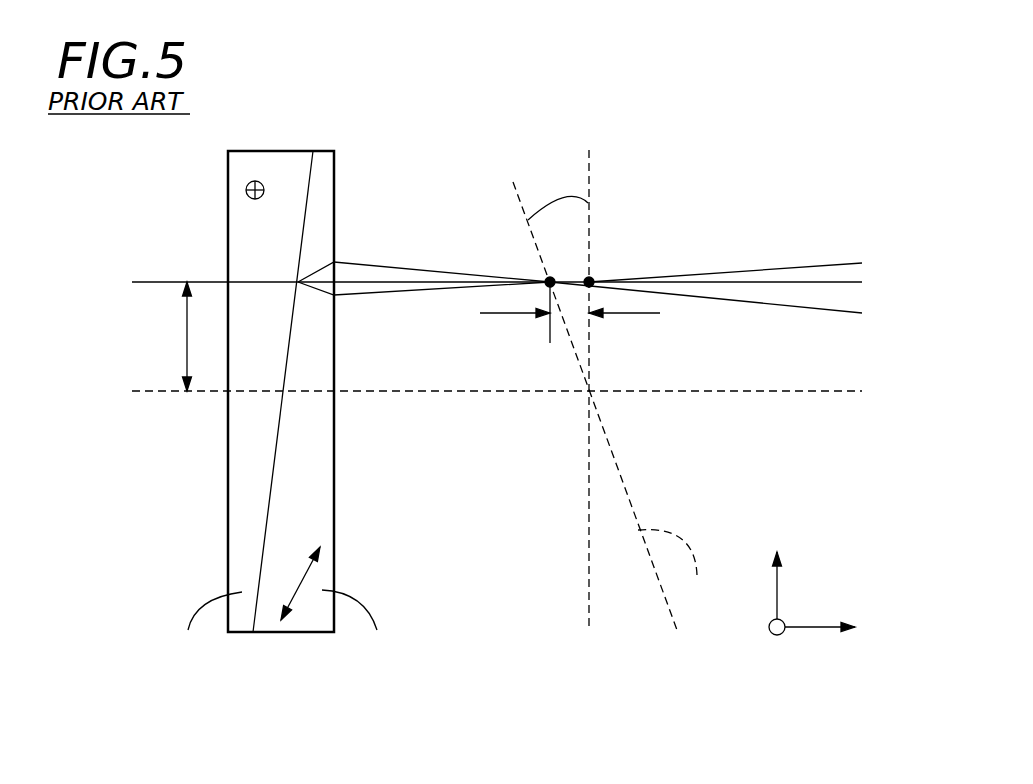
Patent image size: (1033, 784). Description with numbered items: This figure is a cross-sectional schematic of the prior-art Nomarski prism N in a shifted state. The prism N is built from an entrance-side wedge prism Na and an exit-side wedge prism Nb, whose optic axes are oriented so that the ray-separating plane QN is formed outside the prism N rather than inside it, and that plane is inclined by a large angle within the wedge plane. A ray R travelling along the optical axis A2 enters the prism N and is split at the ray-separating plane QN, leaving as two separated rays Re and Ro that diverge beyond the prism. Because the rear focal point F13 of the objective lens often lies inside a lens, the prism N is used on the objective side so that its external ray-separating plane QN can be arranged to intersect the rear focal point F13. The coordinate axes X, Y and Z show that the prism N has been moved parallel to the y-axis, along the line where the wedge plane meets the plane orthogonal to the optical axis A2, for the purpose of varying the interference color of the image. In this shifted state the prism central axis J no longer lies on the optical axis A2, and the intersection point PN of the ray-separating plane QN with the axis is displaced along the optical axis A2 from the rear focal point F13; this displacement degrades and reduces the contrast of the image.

The Nomarski prism N is at (278, 158).
The entrance-side wedge prism Na is at (206, 636).
The exit-side wedge prism Nb is at (355, 635).
The optical axis / incident ray R is at (150, 282).
The prism central axis J is at (148, 393).
The intersection point PN is at (547, 280).
The rear focal point F13 is at (589, 280).
The extraordinary ray Re is at (772, 267).
The ordinary ray Ro is at (772, 305).
The optical axis A2 is at (820, 278).
The ray-separating plane QN is at (677, 575).
The x-axis X is at (746, 648).
The y-axis Y is at (777, 565).
The z-axis Z is at (835, 631).